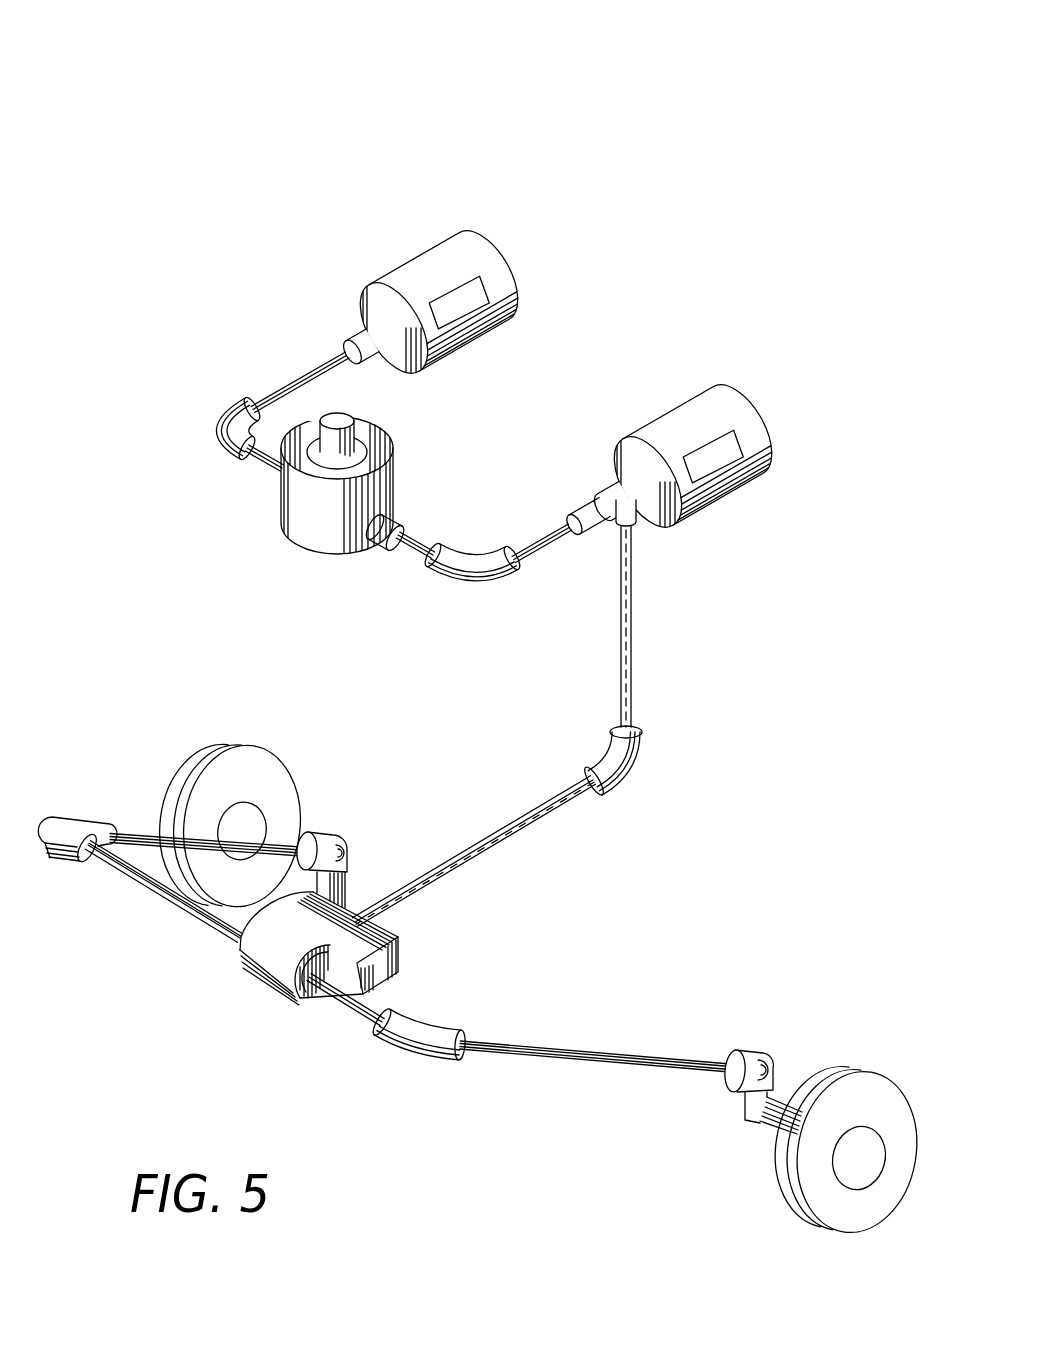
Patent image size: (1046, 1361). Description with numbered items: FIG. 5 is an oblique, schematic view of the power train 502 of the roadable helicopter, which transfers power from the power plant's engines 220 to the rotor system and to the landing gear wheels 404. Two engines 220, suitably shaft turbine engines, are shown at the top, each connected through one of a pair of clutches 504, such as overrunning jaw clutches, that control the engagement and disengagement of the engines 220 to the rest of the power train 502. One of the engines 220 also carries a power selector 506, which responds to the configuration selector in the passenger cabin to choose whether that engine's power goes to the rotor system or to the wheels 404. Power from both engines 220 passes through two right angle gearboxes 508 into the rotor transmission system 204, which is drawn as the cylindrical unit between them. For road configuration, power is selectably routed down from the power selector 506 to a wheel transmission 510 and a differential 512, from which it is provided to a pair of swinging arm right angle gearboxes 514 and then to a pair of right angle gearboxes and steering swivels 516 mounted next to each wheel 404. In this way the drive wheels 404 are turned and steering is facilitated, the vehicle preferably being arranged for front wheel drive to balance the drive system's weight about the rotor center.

The power train 502 is at (606, 141).
The engines 220 is at (445, 240).
The clutches 504 is at (352, 336).
The right angle gearboxes 508 is at (212, 412).
The transmission system 204 is at (302, 515).
The power selector 506 is at (612, 478).
The wheels 404 is at (250, 742).
The swinging arm right angle gearboxes 514 is at (87, 820).
The right angle gearboxes and steering swivels 516 is at (323, 838).
The wheel transmission 510 is at (357, 938).
The differential 512 is at (252, 942).